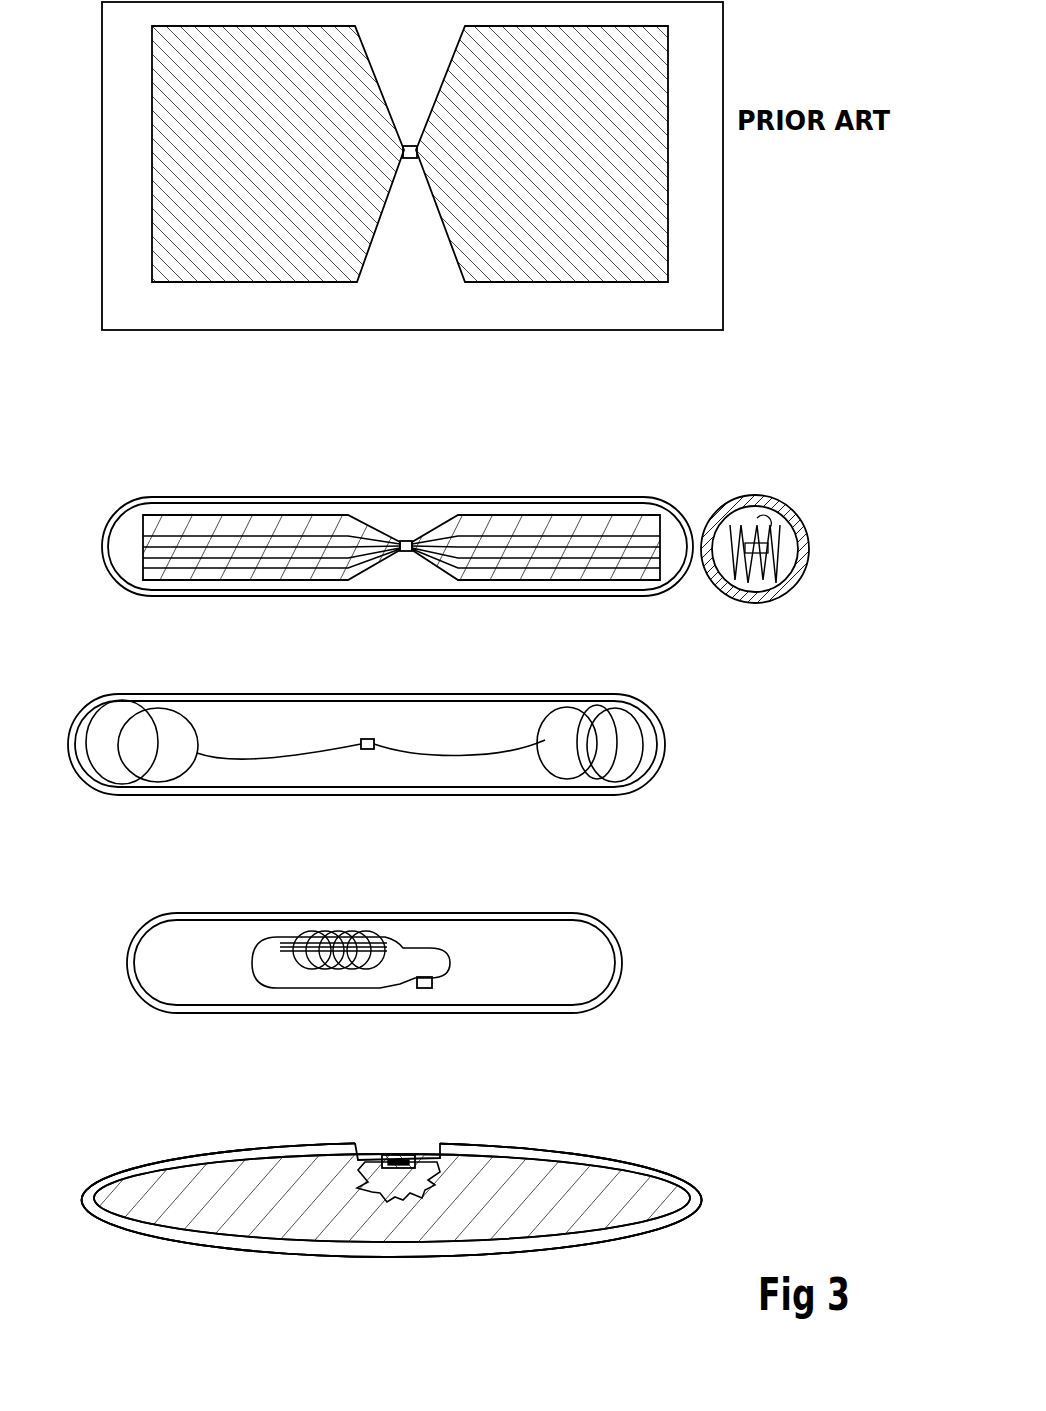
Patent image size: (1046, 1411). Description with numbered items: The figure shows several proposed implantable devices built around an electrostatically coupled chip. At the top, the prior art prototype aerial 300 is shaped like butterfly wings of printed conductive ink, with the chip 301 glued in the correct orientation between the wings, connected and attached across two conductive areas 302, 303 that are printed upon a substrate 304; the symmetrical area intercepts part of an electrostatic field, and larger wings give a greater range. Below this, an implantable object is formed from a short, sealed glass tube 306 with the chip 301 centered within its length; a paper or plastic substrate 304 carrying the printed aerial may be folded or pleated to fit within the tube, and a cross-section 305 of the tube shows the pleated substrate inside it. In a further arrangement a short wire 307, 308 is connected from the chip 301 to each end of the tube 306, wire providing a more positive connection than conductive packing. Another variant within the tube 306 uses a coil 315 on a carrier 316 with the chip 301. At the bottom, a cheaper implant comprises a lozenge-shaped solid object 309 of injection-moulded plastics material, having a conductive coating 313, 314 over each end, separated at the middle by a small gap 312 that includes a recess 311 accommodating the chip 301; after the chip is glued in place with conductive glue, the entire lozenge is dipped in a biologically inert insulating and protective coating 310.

The prototype aerial 300 is at (740, 1).
The chip 301 is at (410, 160).
The conductive area 302 is at (520, 283).
The conductive area 303 is at (207, 282).
The substrate 304 is at (723, 157).
The capsule cross-section 305 is at (737, 603).
The glass tube 306 is at (640, 597).
The wire 307 is at (137, 703).
The wire 308 is at (545, 695).
The lozenge-shaped solid object 309 is at (185, 1170).
The insulating and protective coating 310 is at (85, 1185).
The recess 311 is at (377, 1147).
The gap 312 is at (400, 1233).
The conductive coating 313 is at (300, 1245).
The conductive coating 314 is at (497, 1242).
The coil 315 is at (293, 935).
The substrate 316 is at (322, 955).